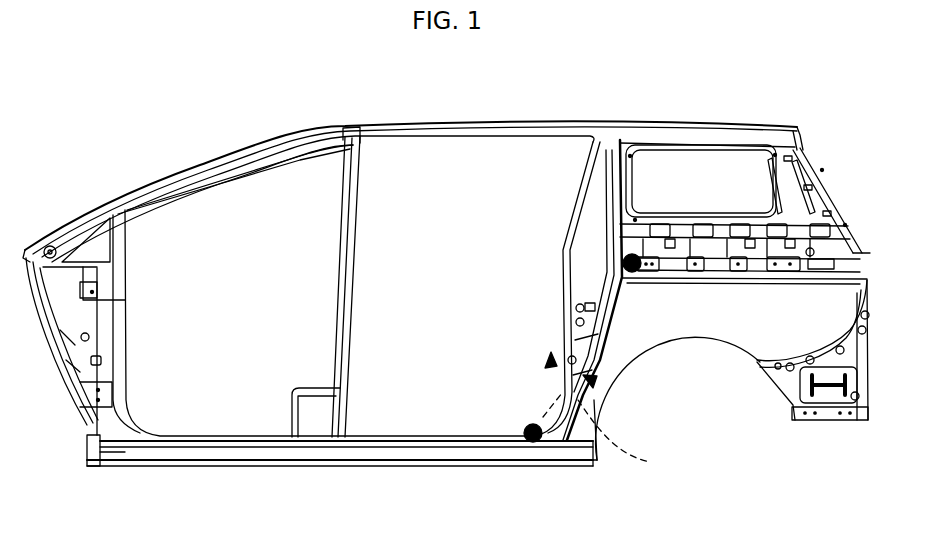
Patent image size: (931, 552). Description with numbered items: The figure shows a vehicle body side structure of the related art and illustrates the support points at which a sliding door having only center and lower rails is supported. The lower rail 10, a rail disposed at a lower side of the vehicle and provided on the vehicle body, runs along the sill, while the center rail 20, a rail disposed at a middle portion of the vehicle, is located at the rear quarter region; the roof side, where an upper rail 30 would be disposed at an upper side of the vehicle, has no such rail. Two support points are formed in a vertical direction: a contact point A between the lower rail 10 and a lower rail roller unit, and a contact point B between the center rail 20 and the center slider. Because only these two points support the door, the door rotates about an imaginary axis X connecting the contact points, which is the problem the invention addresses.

The lower rail 10 is at (425, 436).
The center rail 20 is at (717, 260).
The upper rail 30 is at (433, 124).
The contact point A is at (534, 444).
The contact point B is at (628, 263).
The imaginary axis X is at (607, 435).